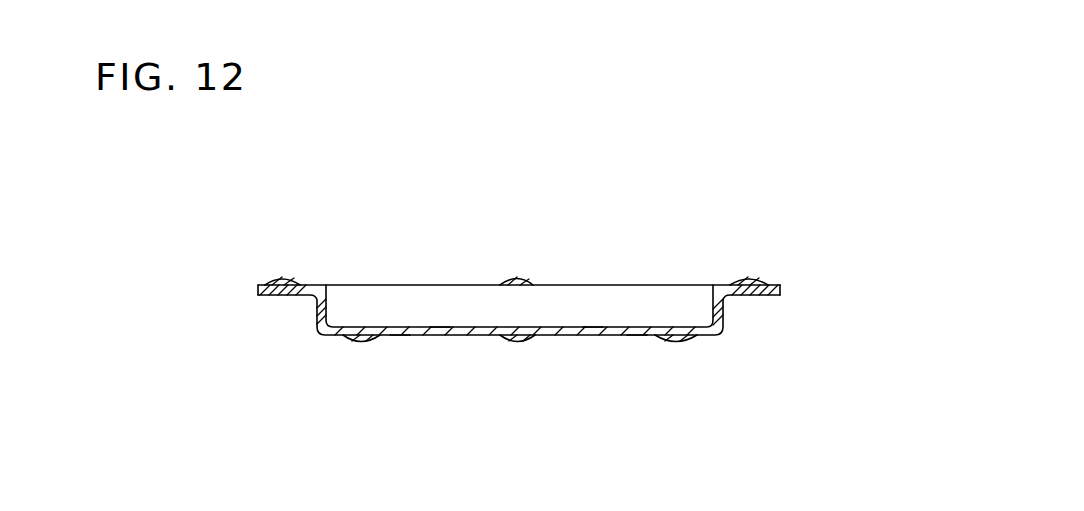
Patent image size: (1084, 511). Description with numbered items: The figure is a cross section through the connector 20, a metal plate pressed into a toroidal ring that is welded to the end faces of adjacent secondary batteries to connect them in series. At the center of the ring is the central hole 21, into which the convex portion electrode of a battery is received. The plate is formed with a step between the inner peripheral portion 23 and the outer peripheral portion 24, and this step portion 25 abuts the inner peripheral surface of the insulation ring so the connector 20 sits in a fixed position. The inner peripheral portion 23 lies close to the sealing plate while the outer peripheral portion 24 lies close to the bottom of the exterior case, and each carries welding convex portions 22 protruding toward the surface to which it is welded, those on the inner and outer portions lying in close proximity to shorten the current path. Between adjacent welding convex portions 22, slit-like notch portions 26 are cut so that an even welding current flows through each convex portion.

The connector 20 is at (597, 218).
The central hole 21 is at (624, 320).
The welding convex portions 22 is at (293, 280).
The inner peripheral portion 23 is at (400, 336).
The outer peripheral portion 24 is at (262, 282).
The step portion 25 is at (313, 311).
The notch portions 26 is at (440, 340).